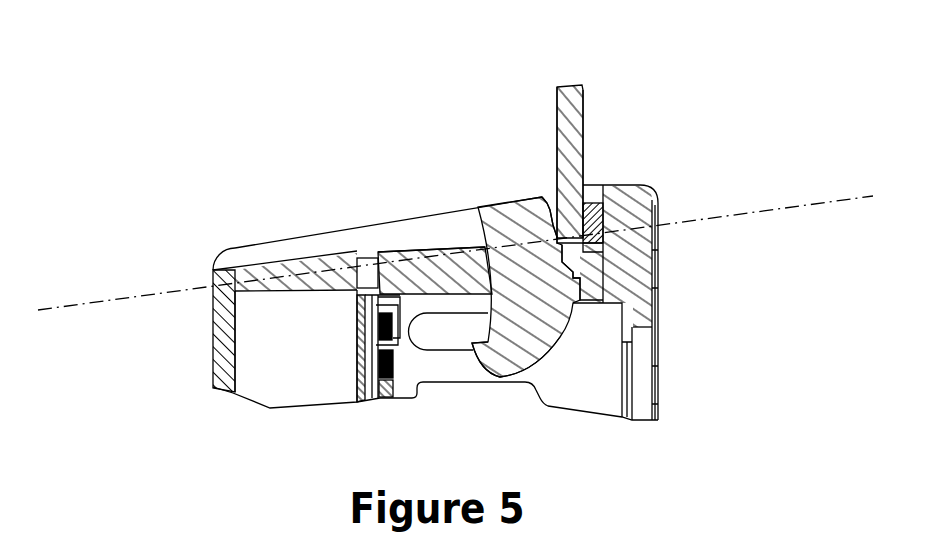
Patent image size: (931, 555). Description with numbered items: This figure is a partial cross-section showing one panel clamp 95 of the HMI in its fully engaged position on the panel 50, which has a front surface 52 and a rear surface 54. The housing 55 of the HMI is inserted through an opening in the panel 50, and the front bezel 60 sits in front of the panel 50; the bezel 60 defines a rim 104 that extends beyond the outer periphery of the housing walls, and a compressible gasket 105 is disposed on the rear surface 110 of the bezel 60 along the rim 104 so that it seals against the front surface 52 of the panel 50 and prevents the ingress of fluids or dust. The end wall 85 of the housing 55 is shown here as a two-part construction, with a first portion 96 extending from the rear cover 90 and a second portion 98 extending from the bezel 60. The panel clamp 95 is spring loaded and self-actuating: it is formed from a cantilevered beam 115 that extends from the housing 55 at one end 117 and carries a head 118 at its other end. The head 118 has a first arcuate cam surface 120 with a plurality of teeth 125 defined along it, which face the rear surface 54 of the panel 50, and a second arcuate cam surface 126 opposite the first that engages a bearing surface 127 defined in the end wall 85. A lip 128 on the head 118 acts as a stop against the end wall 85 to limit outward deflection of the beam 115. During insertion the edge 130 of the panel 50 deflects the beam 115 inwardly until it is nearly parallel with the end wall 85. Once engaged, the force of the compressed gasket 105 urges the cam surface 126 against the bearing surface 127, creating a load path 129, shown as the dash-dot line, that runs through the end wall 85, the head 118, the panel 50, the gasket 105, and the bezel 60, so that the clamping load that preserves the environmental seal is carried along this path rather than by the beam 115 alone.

The panel 50 is at (575, 98).
The front surface 52 is at (583, 97).
The rear surface 54 is at (556, 97).
The housing 55 is at (222, 384).
The front bezel 60 is at (633, 253).
The end wall 85 is at (371, 253).
The rear cover 90 is at (222, 336).
The panel clamp 95 is at (397, 206).
The first portion 96 is at (283, 282).
The second portion 98 is at (424, 282).
The rim 104 is at (605, 187).
The compressible gasket 105 is at (655, 202).
The rear surface 110 is at (585, 205).
The cantilevered beam 115 is at (312, 250).
The end 117 is at (230, 262).
The head 118 is at (524, 330).
The first arcuate cam surface 120 is at (550, 200).
The teeth 125 is at (630, 293).
The second arcuate cam surface 126 is at (492, 292).
The bearing surface 127 is at (472, 214).
The lip 128 is at (483, 343).
The load path 129 is at (800, 205).
The edge 130 is at (640, 250).